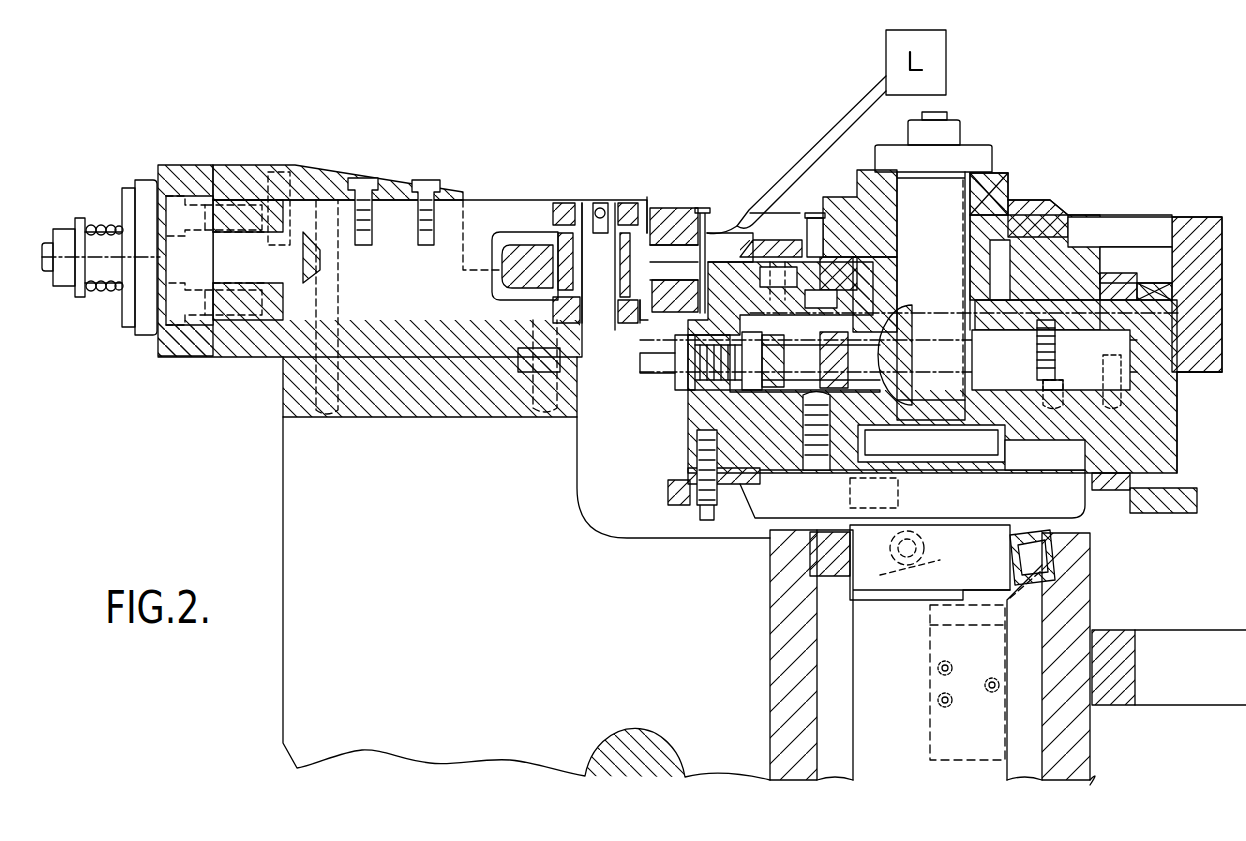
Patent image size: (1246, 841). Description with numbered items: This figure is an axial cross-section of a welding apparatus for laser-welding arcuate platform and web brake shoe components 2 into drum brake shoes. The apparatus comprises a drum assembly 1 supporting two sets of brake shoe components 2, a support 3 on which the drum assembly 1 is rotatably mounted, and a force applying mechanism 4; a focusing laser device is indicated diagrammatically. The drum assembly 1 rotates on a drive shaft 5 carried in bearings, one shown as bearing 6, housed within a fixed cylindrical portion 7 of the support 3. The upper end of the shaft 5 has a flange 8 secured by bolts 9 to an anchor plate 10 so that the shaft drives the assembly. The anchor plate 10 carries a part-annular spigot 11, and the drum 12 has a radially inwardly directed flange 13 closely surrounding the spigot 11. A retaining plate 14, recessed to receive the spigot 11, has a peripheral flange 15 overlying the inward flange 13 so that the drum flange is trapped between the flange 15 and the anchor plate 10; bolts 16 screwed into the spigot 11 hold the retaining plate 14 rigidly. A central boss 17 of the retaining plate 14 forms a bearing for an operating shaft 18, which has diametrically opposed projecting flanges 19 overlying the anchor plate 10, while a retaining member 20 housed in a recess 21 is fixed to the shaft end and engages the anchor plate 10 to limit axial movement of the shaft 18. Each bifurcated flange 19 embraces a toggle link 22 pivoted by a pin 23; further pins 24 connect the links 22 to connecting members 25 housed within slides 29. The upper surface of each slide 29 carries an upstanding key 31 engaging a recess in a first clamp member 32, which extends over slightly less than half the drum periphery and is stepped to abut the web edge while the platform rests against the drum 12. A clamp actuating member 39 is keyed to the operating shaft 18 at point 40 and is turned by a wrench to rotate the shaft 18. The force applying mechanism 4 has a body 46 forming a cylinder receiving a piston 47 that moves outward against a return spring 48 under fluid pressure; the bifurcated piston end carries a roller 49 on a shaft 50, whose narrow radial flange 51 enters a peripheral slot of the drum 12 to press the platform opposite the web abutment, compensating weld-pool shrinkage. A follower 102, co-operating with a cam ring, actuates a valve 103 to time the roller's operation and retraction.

The drum assembly 1 is at (1190, 440).
The brake shoe components 2 is at (724, 219).
The support 3 is at (1173, 624).
The force applying mechanism 4 is at (238, 369).
The drive shaft 5 is at (870, 650).
The bearing 6 is at (1040, 565).
The cylindrical portion 7 is at (1075, 590).
The flange 8 is at (910, 562).
The bolts 9 is at (800, 485).
The anchor plate 10 is at (725, 410).
The part-annular spigot 11 is at (1030, 355).
The drum 12 is at (1232, 355).
The radially inwardly directed flange 13 is at (1155, 367).
The retaining plate 14 is at (1078, 310).
The peripheral flange 15 is at (1145, 300).
The bolts 16 is at (1035, 375).
The central boss 17 is at (985, 262).
The operating shaft 18 is at (965, 412).
The shaft projecting flanges 19 is at (885, 400).
The retaining member 20 is at (902, 440).
The recess 21 is at (944, 465).
The toggle links 22 is at (890, 302).
The pins 23 is at (915, 320).
The further pins 24 is at (770, 385).
The connecting members 25 is at (780, 360).
The slides 29 is at (723, 320).
The upstanding key 31 is at (895, 240).
The first clamp member 32 is at (838, 262).
The clamp actuating member 39 is at (998, 183).
The keying point 40 is at (990, 210).
The body 46 is at (335, 165).
The piston 47 is at (512, 215).
The return spring 48 is at (130, 210).
The roller 49 is at (664, 250).
The shaft 50 is at (585, 245).
The radial flange 51 is at (684, 240).
The follower 102 is at (925, 548).
The valve 103 is at (940, 683).